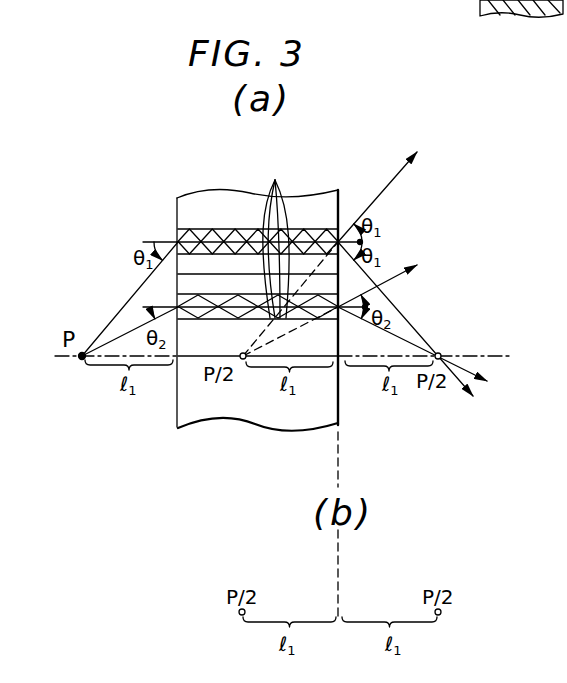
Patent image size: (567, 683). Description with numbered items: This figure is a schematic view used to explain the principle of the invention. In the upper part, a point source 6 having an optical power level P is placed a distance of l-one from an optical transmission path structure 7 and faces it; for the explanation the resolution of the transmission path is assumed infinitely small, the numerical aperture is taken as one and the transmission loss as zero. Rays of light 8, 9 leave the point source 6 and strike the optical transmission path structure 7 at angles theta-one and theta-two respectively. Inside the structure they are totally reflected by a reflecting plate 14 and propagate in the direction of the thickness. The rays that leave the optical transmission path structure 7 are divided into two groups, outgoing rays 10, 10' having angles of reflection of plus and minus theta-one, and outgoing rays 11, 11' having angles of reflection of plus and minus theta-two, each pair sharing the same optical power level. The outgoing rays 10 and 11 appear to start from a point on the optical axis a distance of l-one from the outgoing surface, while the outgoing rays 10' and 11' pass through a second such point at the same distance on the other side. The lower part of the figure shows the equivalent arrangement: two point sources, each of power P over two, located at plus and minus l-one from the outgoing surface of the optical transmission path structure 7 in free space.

The point source 6 is at (82, 358).
The optical transmission path structure 7 is at (226, 192).
The ray of light 8 is at (137, 290).
The ray of light 9 is at (118, 337).
The outgoing ray 10 is at (395, 197).
The outgoing ray 10' is at (405, 341).
The outgoing ray 11 is at (400, 284).
The outgoing ray 11' is at (443, 344).
The reflecting plate 14 is at (275, 180).